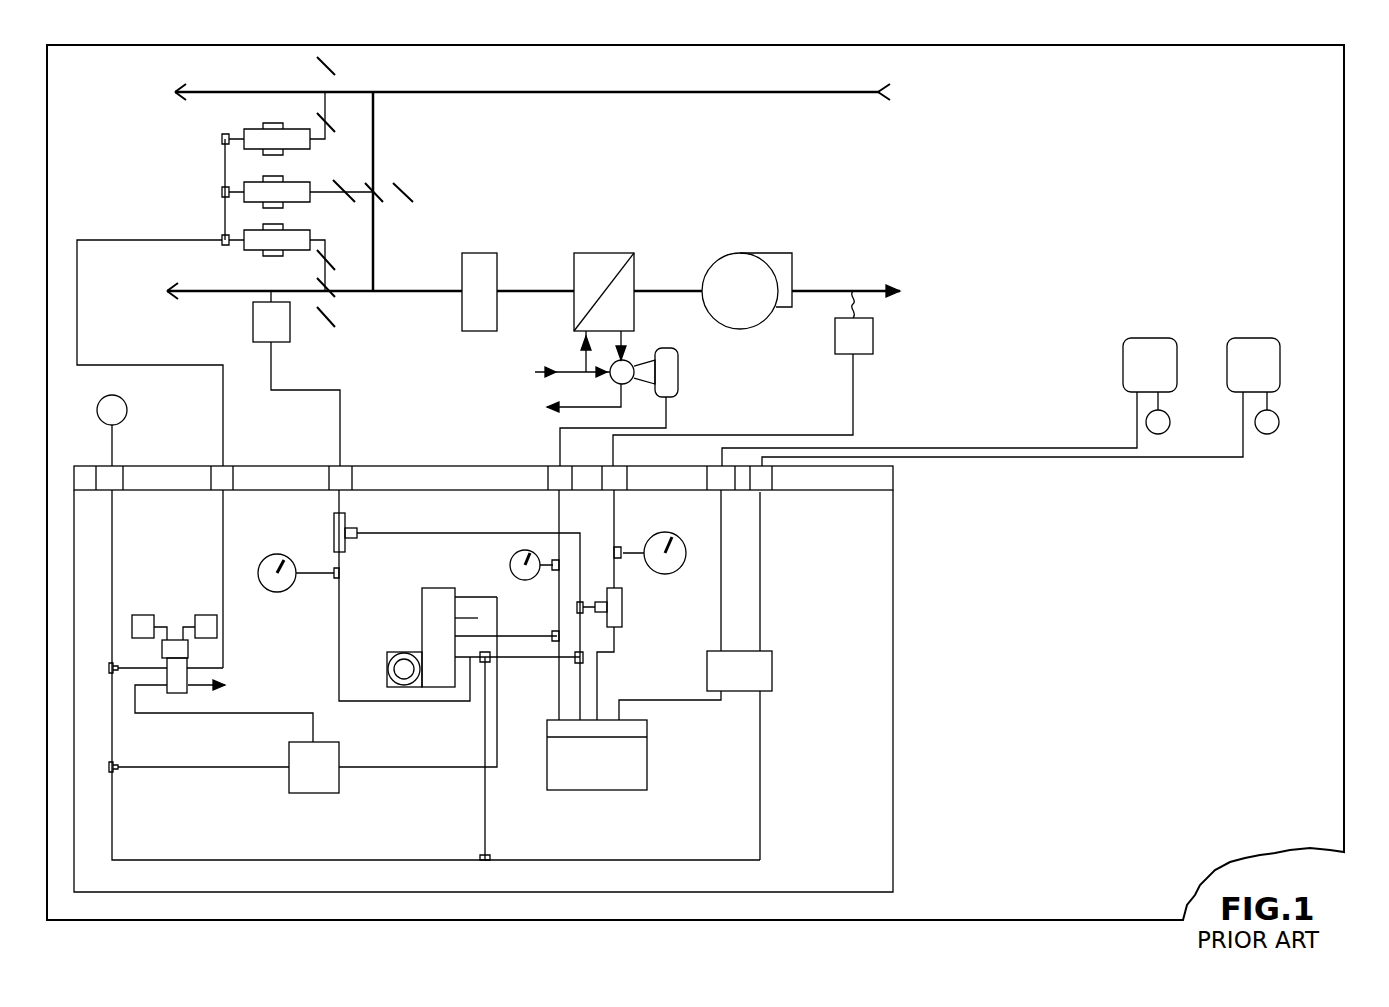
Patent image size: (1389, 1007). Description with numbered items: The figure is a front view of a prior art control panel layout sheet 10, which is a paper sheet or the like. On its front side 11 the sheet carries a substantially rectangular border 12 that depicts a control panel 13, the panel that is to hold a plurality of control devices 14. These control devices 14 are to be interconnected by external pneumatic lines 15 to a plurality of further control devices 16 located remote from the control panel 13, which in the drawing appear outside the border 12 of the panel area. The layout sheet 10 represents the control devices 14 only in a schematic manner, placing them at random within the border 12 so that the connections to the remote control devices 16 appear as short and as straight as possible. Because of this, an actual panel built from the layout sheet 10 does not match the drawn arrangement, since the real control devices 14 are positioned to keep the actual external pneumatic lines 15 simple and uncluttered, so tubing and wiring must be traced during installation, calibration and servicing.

The control panel layout sheet 10 is at (1322, 157).
The front side 11 is at (1327, 222).
The border 12 is at (893, 613).
The control panel 13 is at (887, 702).
The control devices 14 is at (172, 676).
The external pneumatic lines 15 is at (126, 240).
The control devices 16 is at (300, 183).